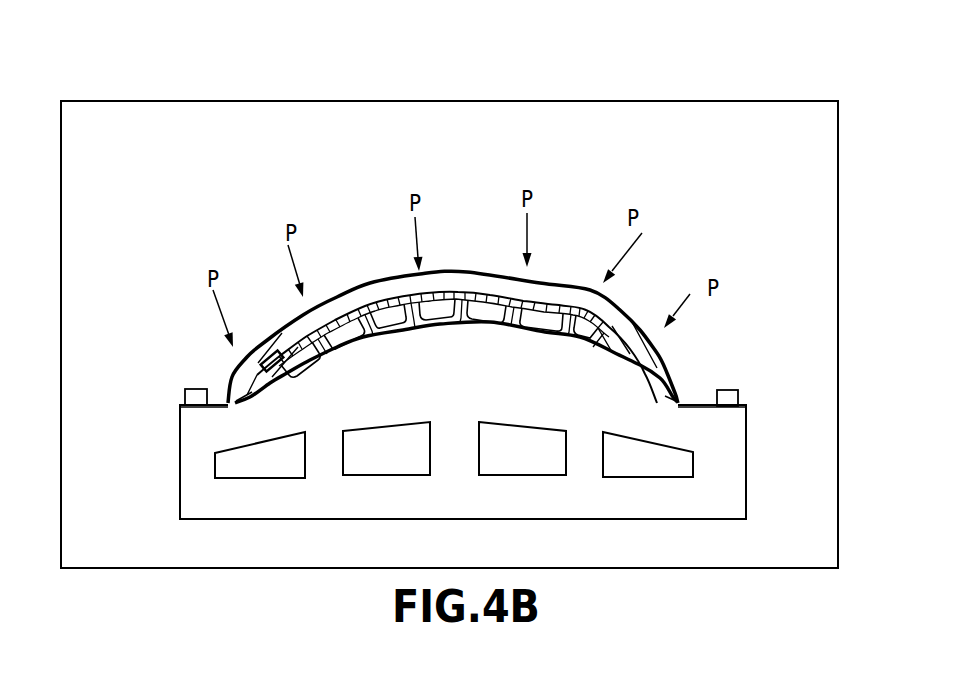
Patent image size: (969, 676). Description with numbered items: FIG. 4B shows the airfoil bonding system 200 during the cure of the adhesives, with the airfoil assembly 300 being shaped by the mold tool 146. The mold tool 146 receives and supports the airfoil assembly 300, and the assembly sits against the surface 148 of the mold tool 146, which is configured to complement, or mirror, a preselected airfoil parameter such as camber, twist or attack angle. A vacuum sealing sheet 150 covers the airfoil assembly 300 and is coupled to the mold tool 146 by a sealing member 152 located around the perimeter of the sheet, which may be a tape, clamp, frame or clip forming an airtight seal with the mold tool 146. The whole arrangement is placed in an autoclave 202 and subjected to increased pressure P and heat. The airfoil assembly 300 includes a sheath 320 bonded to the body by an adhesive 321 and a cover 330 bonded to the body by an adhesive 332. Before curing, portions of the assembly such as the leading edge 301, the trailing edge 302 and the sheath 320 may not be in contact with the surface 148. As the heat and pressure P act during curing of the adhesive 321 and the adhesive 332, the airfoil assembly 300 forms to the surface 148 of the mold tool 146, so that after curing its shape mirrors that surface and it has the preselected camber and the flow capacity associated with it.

The autoclave 202 is at (159, 101).
The airfoil bonding system 200 is at (181, 238).
The surface of mold tool 148 is at (683, 399).
The sealing member 152 is at (187, 392).
The mold tool 146 is at (472, 402).
The vacuum sealing sheet 150 is at (465, 272).
The airfoil assembly 300 is at (553, 283).
The cover 330 is at (377, 299).
The sheath 320 is at (245, 387).
The adhesive 321 is at (268, 357).
The leading edge 301 is at (272, 383).
The trailing edge 302 is at (674, 402).
The adhesive 332 is at (625, 330).